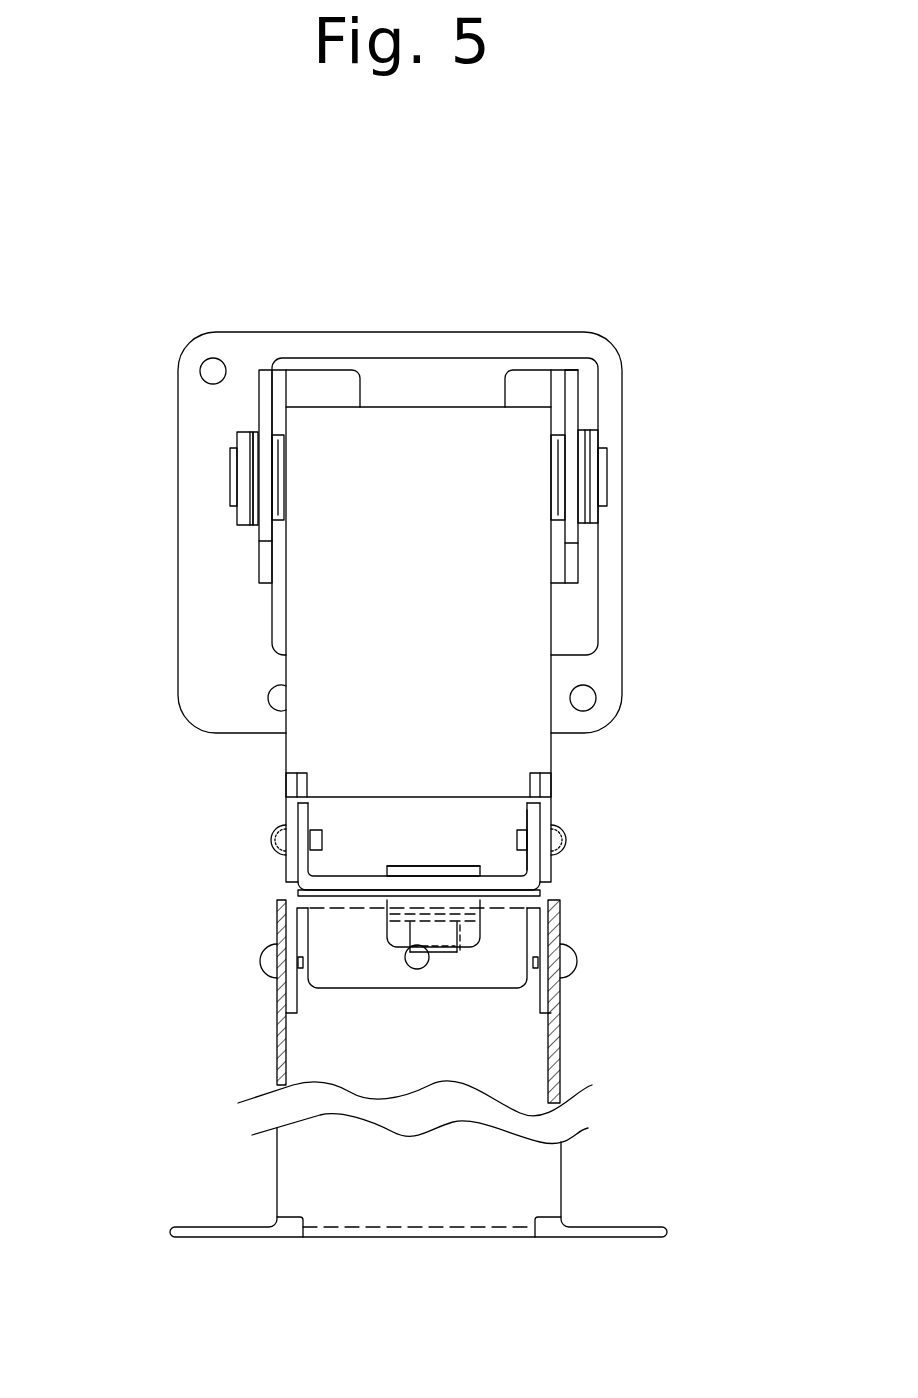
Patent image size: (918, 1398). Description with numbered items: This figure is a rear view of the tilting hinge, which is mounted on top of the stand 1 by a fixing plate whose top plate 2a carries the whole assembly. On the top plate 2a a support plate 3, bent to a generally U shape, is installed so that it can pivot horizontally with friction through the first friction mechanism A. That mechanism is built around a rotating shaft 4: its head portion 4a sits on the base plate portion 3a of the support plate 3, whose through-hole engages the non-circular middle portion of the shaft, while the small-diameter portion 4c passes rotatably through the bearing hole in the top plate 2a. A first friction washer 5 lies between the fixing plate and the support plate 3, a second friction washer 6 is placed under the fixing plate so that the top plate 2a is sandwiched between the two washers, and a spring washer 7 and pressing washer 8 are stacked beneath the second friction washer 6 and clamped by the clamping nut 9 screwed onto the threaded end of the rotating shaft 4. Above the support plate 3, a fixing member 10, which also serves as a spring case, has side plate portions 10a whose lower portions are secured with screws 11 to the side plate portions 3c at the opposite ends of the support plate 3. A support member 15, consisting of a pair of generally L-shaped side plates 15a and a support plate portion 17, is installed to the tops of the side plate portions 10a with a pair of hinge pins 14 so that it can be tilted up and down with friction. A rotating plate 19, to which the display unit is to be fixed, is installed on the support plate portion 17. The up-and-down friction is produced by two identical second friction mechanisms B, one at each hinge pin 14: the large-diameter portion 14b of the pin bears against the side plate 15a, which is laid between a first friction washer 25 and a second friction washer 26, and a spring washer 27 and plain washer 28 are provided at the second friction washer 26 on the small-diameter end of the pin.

The stand 1 is at (553, 1195).
The top plate 2a is at (548, 898).
The support plate 3 is at (277, 867).
The base plate portion 3a is at (497, 887).
The side plate portions 3c is at (304, 813).
The rotating shaft 4 is at (436, 866).
The head portion 4a is at (407, 873).
The small-diameter portion 4c is at (423, 967).
The first friction washer 5 is at (343, 893).
The second friction washer 6 is at (383, 910).
The spring washer 7 is at (480, 910).
The pressing washer 8 is at (470, 920).
The clamping nut 9 is at (467, 923).
The fixing member 10 is at (413, 595).
The side plate portions 10a is at (297, 792).
The screws 11 is at (277, 838).
The hinge pins 14 is at (228, 470).
The large-diameter portion 14b is at (281, 448).
The support member 15 is at (360, 356).
The side plates 15a is at (258, 426).
The support plate portion 17 is at (425, 367).
The rotating plate 19 is at (558, 347).
The first friction washer 25 is at (273, 503).
The second friction washer 26 is at (257, 520).
The spring washer 27 is at (253, 513).
The plain washer 28 is at (233, 500).
The first friction mechanism A is at (392, 953).
The second friction mechanisms B is at (252, 422).